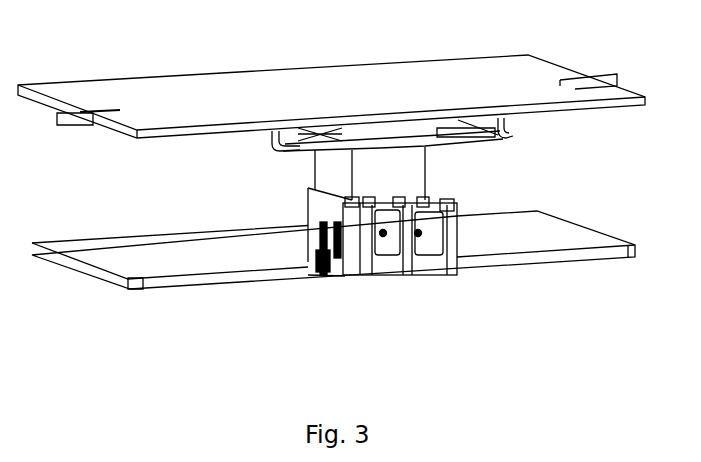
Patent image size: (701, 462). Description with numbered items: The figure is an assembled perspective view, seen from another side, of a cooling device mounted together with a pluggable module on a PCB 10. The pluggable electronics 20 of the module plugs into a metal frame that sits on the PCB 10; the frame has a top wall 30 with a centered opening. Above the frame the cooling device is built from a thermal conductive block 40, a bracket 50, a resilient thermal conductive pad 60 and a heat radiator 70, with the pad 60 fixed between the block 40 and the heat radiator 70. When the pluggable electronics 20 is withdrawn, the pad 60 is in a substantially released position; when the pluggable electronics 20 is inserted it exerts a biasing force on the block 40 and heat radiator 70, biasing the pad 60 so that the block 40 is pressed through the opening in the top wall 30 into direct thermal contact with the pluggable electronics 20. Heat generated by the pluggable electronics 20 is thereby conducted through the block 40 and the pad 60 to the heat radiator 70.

The PCB 10 is at (172, 262).
The pluggable electronics 20 is at (413, 242).
The top wall 30 is at (320, 213).
The thermal conductive block 40 is at (407, 173).
The bracket 50 is at (510, 133).
The resilient thermal conductive pad 60 is at (288, 153).
The heat radiator 70 is at (527, 65).